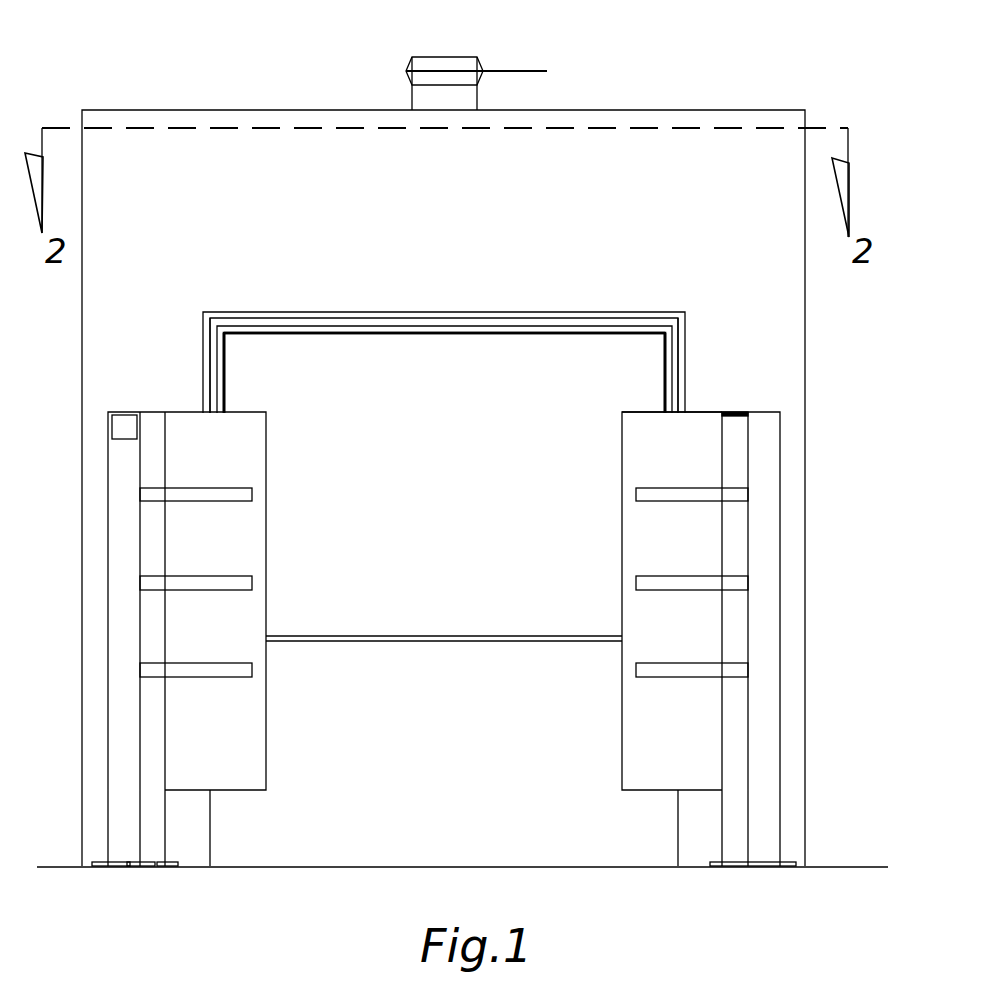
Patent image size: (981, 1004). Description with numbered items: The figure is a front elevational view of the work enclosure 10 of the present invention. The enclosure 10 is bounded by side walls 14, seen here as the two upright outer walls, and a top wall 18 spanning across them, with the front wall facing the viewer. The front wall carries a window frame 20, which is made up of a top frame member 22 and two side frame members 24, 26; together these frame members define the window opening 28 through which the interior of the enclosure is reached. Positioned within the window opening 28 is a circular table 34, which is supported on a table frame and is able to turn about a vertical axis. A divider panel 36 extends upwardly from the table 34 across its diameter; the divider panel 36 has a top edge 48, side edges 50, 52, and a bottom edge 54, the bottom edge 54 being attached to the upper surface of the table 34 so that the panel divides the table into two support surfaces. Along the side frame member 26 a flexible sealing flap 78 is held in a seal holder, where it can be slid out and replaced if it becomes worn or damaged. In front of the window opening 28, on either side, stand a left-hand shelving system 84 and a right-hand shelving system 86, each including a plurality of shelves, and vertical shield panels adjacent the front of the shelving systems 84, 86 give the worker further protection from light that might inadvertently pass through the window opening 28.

The work enclosure 10 is at (451, 434).
The side walls 14 is at (83, 306).
The top wall 18 is at (330, 108).
The window frame 20 is at (453, 333).
The top frame member 22 is at (337, 312).
The side frame member 24 is at (208, 363).
The side frame member 26 is at (684, 360).
The window opening 28 is at (497, 320).
The table 34 is at (444, 632).
The divider panel 36 is at (456, 472).
The top edge 48 is at (432, 332).
The side edge 50 is at (224, 385).
The side edge 52 is at (665, 395).
The bottom edge 54 is at (416, 638).
The flexible sealing flap 78 is at (604, 332).
The left-hand shelving system 84 is at (179, 639).
The right-hand shelving system 86 is at (712, 639).